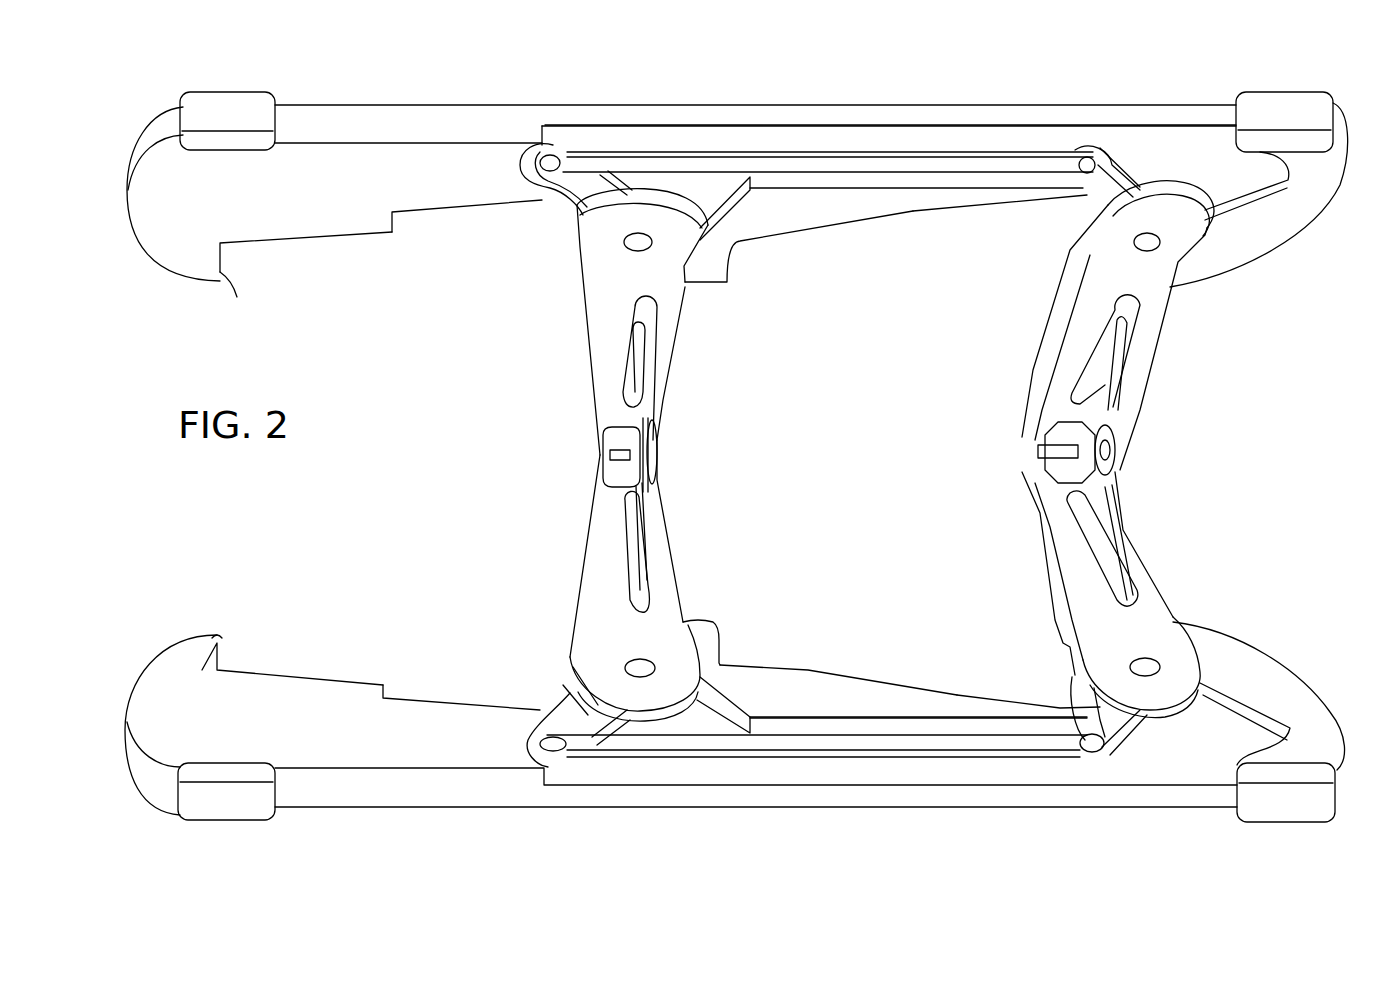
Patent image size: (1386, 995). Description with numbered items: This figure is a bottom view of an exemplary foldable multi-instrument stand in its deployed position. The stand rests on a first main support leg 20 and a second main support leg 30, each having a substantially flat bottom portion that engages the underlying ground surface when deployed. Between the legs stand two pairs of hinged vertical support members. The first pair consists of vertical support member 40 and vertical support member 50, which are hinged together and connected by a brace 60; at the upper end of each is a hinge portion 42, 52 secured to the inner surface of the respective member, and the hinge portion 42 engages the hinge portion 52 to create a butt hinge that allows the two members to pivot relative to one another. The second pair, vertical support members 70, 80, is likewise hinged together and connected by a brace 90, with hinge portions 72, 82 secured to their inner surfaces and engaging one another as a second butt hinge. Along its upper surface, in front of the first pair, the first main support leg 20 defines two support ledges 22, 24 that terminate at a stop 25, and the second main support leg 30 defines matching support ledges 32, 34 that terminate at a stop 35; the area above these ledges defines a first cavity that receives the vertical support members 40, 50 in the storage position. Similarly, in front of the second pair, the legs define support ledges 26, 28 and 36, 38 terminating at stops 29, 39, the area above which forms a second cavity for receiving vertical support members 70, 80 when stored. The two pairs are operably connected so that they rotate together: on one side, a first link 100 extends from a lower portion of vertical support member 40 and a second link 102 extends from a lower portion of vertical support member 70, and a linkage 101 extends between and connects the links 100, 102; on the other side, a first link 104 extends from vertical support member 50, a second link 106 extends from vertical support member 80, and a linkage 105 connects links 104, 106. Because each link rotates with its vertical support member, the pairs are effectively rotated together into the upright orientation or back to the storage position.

The first main support leg 20 is at (477, 115).
The support ledge 22 is at (314, 235).
The support ledge 24 is at (440, 210).
The stop 25 is at (228, 281).
The support ledge 26 is at (820, 233).
The support ledge 28 is at (970, 207).
The stop 29 is at (722, 280).
The second main support leg 30 is at (448, 795).
The support ledge 32 is at (283, 672).
The support ledge 34 is at (450, 703).
The stop 35 is at (217, 643).
The support ledge 36 is at (810, 670).
The support ledge 38 is at (957, 700).
The stop 39 is at (720, 647).
The vertical support member 40 is at (590, 357).
The hinge portion 42 is at (657, 437).
The vertical support member 50 is at (590, 533).
The hinge portion 52 is at (657, 480).
The brace 60 is at (633, 447).
The vertical support member 70 is at (1060, 330).
The hinge portion 72 is at (1052, 437).
The vertical support member 80 is at (1047, 573).
The hinge portion 82 is at (1052, 465).
The brace 90 is at (1117, 447).
The first link 100 is at (583, 195).
The linkage 101 is at (885, 165).
The second link 102 is at (1110, 198).
The first link 104 is at (563, 697).
The linkage 105 is at (893, 743).
The second link 106 is at (1060, 707).